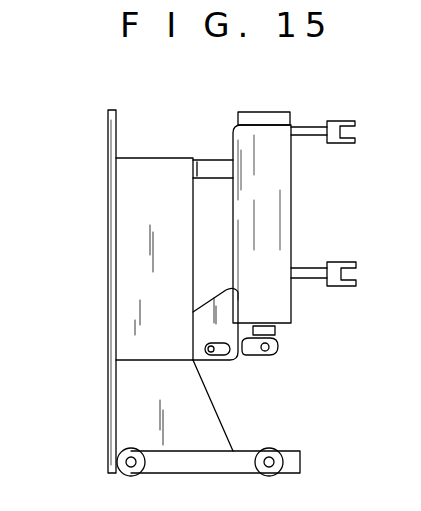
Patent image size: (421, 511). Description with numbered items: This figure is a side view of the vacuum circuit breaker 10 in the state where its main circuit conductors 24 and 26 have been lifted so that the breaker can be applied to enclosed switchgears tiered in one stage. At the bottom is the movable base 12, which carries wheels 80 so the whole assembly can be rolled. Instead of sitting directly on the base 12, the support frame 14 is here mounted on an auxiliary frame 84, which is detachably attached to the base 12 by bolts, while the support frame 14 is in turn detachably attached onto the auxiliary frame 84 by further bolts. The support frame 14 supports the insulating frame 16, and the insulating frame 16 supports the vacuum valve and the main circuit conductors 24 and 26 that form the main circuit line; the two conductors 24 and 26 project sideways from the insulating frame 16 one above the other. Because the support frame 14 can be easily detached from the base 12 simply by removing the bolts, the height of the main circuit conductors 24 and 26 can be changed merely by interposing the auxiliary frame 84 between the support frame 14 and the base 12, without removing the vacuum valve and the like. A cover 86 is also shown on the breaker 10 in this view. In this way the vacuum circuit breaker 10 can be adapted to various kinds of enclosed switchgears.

The vacuum circuit breaker 10 is at (362, 251).
The movable base 12 is at (247, 466).
The support frame 14 is at (124, 337).
The insulating frame 16 is at (219, 148).
The main circuit conductor 24 is at (312, 127).
The main circuit conductor 26 is at (313, 266).
The wheels 80 is at (276, 472).
The auxiliary frame 84 is at (175, 440).
The cover 86 is at (107, 184).